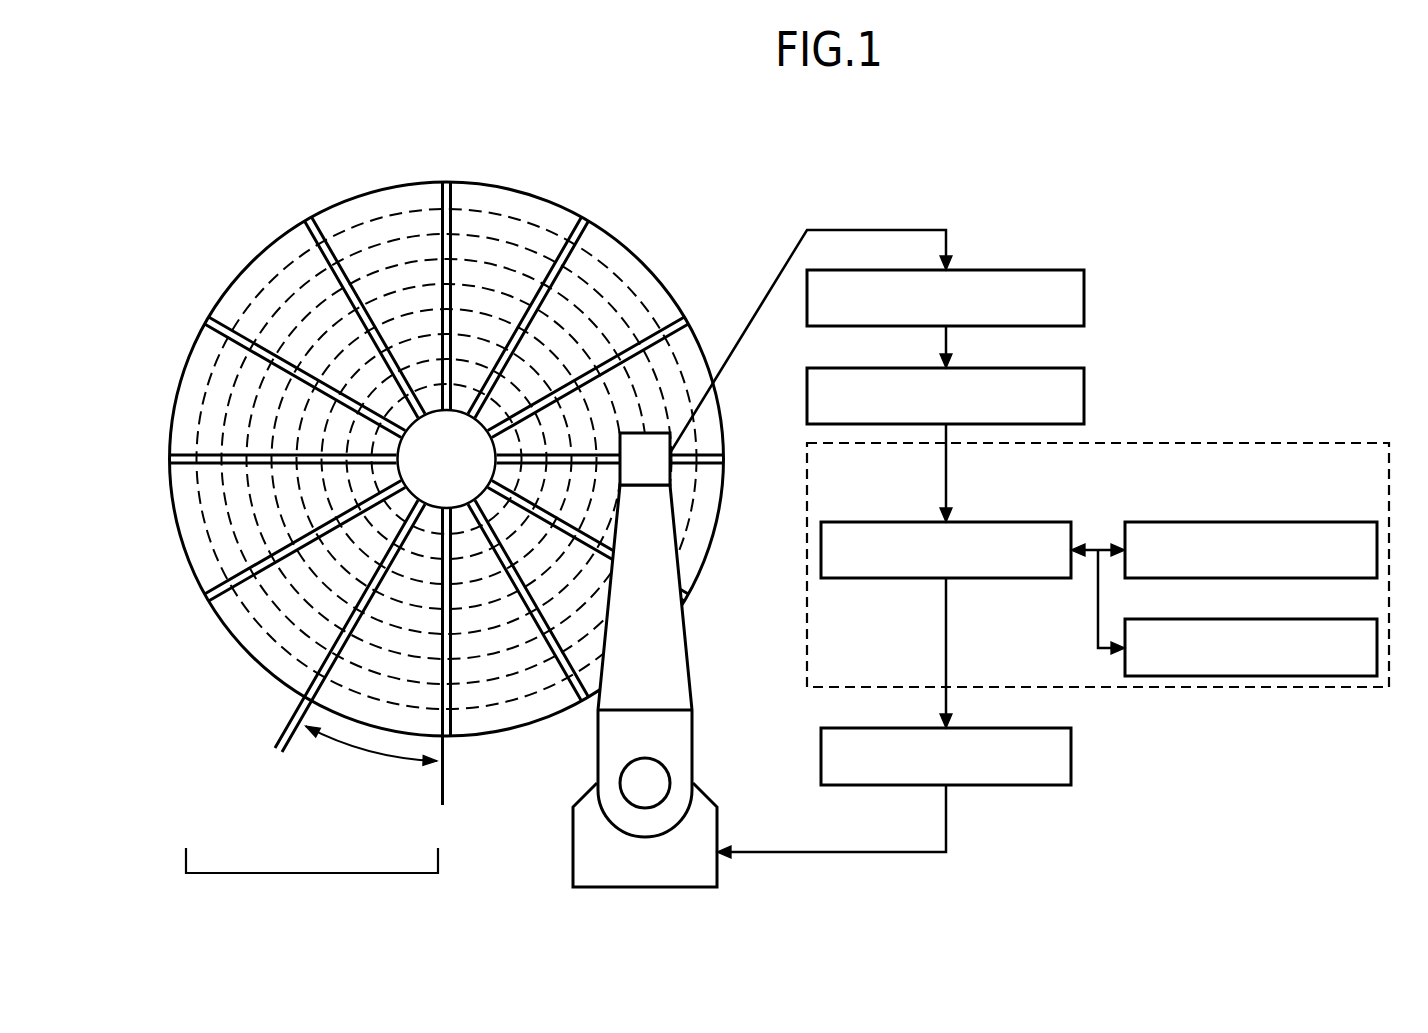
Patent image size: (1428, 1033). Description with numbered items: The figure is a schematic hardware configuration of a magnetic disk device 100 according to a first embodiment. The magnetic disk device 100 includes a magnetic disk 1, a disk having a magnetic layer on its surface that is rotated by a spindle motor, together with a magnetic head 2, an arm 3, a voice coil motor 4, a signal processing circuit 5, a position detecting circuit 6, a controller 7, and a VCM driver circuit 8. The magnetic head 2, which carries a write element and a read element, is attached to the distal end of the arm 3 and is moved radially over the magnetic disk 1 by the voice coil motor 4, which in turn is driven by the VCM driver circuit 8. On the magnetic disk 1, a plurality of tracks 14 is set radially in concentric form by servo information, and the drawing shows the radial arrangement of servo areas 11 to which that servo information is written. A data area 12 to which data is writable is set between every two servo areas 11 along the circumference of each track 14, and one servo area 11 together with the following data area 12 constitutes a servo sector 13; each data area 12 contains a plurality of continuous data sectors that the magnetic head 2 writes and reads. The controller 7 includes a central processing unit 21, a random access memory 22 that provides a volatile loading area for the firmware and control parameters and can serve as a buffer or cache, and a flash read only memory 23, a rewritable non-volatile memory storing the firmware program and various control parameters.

The magnetic disk device 100 is at (893, 163).
The magnetic disk 1 is at (418, 522).
The magnetic head 2 is at (656, 433).
The arm 3 is at (693, 676).
The voice coil motor 4 is at (647, 888).
The signal processing circuit 5 is at (1002, 270).
The position detecting circuit 6 is at (1002, 368).
The controller 7 is at (1222, 443).
The VCM driver circuit 8 is at (1002, 728).
The servo area 11 is at (280, 754).
The data area 12 is at (363, 754).
The servo sector 13 is at (310, 874).
The track 14 is at (417, 258).
The central processing unit 21 is at (1003, 522).
The random access memory 22 is at (1309, 522).
The flash read only memory 23 is at (1308, 619).